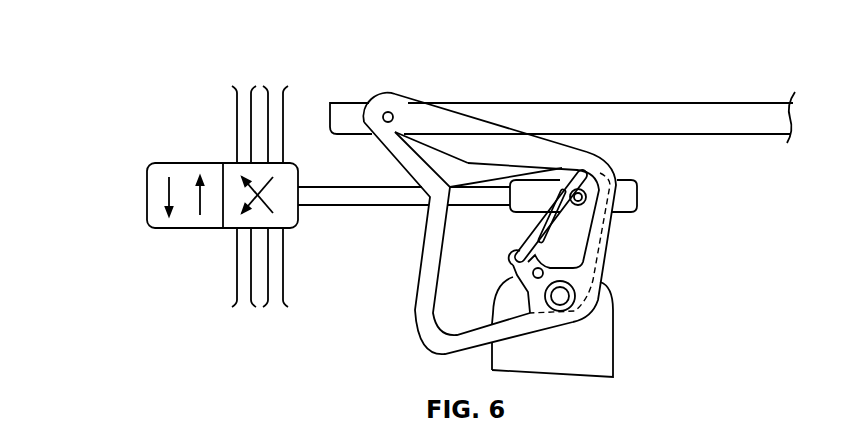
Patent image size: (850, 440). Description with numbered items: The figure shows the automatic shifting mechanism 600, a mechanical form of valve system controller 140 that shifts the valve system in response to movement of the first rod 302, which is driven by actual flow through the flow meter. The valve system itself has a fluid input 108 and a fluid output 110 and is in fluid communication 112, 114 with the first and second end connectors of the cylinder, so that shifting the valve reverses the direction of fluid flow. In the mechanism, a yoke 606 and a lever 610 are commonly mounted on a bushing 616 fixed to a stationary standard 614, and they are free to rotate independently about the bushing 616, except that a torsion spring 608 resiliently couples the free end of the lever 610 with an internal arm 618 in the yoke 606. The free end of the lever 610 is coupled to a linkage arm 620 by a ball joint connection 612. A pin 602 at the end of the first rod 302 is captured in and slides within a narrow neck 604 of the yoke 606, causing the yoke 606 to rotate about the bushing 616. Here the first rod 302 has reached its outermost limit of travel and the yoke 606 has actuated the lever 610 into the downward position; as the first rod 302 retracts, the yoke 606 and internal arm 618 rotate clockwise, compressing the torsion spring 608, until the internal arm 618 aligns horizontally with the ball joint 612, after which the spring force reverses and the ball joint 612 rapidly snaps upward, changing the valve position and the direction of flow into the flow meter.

The automatic shifting mechanism 600 is at (120, 92).
The valve system controller 140 is at (528, 44).
The first rod 302 is at (681, 103).
The fluid input 108 is at (283, 268).
The fluid output 110 is at (237, 268).
The fluid communication 112 is at (237, 139).
The fluid communication 114 is at (283, 139).
The pin 602 is at (385, 112).
The narrow neck 604 is at (399, 93).
The yoke 606 is at (415, 312).
The torsion spring 608 is at (557, 174).
The lever 610 is at (567, 173).
The ball joint connection 612 is at (588, 199).
The stationary standard 614 is at (614, 347).
The bushing 616 is at (580, 297).
The internal arm 618 is at (512, 266).
The linkage arm 620 is at (370, 212).